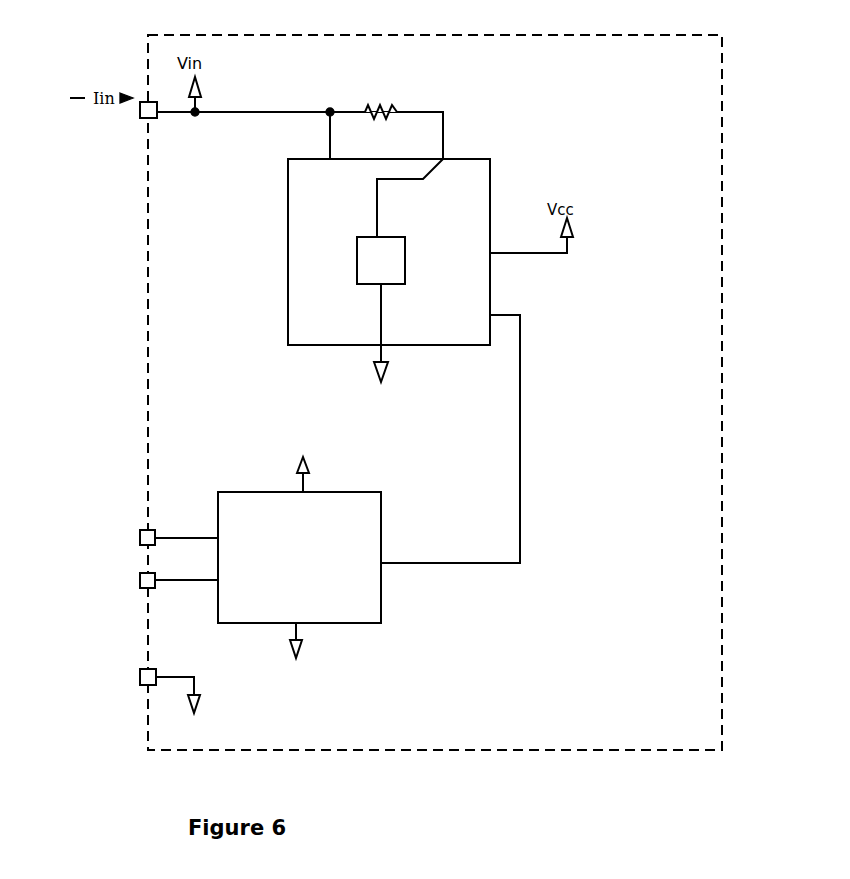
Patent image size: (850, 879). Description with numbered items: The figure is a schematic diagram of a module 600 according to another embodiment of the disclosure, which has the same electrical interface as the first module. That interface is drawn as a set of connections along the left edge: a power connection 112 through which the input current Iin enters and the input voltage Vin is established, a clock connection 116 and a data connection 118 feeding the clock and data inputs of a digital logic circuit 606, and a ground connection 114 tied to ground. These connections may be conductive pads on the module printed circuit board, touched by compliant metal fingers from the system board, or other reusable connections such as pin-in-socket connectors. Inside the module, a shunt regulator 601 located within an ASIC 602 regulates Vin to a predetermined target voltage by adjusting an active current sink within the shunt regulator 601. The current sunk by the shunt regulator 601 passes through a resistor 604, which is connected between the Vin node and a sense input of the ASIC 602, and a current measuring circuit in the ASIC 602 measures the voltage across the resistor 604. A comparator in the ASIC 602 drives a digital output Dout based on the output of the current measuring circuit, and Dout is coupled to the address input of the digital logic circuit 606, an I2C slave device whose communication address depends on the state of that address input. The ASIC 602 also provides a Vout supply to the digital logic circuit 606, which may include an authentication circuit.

The module 600 is at (745, 90).
The power connection 112 is at (148, 102).
The ground connection 114 is at (144, 669).
The clock connection 116 is at (155, 530).
The data connection 118 is at (155, 586).
The shunt regulator 601 is at (357, 268).
The ASIC 602 is at (341, 270).
The resistor 604 is at (388, 106).
The digital logic circuit 606 is at (350, 623).